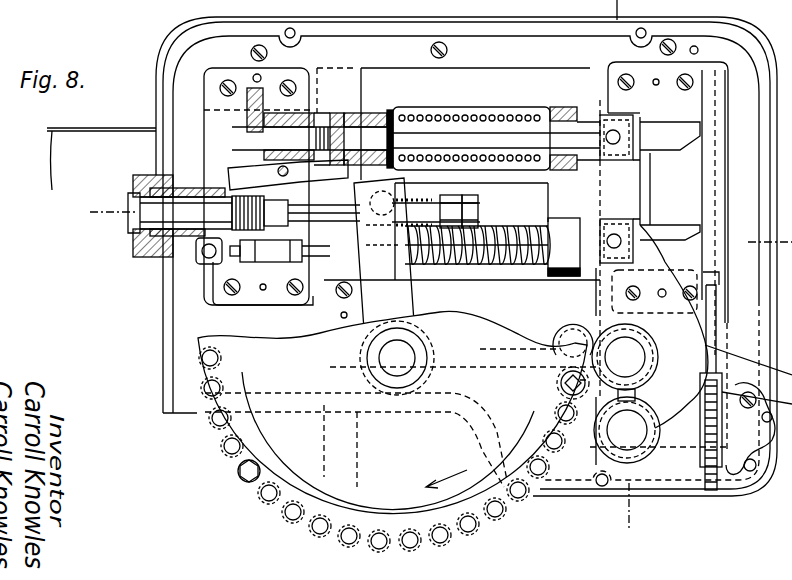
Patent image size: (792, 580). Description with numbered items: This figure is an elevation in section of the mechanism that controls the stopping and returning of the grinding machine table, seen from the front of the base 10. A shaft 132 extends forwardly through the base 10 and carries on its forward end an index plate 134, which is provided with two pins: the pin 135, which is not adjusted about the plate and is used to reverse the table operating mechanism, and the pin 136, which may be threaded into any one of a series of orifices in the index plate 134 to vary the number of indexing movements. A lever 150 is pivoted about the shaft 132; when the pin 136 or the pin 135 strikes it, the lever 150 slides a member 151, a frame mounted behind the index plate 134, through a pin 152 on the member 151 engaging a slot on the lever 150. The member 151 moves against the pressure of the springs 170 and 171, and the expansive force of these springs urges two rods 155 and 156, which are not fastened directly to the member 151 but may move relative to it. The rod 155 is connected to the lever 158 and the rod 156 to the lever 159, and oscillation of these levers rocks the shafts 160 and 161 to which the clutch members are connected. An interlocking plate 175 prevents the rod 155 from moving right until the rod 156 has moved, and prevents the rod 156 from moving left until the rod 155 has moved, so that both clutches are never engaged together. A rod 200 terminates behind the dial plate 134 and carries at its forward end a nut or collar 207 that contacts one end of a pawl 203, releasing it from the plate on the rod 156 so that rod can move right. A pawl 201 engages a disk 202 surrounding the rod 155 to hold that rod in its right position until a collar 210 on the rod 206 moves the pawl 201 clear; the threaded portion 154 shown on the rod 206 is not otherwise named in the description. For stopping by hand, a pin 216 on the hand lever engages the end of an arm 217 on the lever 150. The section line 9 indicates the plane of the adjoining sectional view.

The shaft 9 is at (103, 204).
The base 10 is at (648, 524).
The shaft 132 is at (380, 358).
The index plate 134 is at (222, 440).
The pin 135 is at (562, 388).
The pin 136 is at (245, 480).
The lever 150 is at (402, 296).
The member 151 is at (378, 113).
The pin 152 is at (384, 254).
The threaded rod 154 is at (408, 203).
The rod 155 is at (512, 128).
The rod 156 is at (490, 226).
The lever 158 is at (628, 190).
The lever 159 is at (690, 330).
The shaft 160 is at (632, 360).
The shaft 161 is at (632, 438).
The spring 170 is at (440, 116).
The spring 171 is at (466, 264).
The interlocking plate 175 is at (700, 155).
The rod 200 is at (203, 253).
The pawl 201 is at (240, 172).
The disk 202 is at (336, 113).
The pawl 203 is at (277, 249).
The rod 206 is at (446, 197).
The nut or collar 207 is at (472, 197).
The collar 210 is at (250, 199).
The pin 216 is at (562, 333).
The arm 217 is at (402, 418).